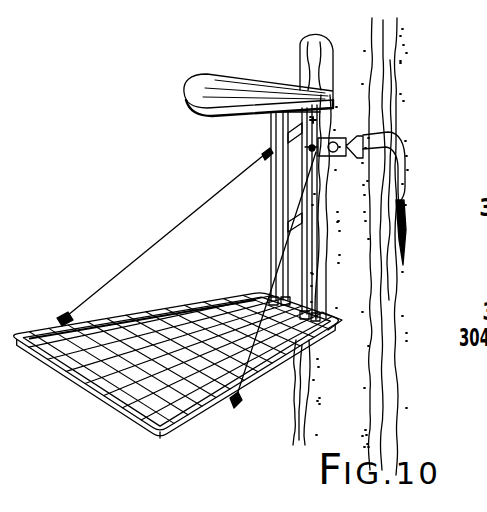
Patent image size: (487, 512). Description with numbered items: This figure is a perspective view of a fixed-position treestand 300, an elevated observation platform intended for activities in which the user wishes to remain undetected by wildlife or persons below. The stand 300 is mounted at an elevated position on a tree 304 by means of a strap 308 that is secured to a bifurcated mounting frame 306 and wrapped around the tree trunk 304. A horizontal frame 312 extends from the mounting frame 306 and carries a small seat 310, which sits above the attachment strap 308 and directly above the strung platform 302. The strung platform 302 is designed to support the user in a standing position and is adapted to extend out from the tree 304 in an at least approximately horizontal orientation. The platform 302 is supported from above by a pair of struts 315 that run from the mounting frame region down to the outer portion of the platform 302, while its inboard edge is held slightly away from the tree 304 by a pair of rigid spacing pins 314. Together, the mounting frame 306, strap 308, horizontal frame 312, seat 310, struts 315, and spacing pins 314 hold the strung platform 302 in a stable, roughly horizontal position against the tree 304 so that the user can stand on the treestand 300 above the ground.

The treestand 300 is at (246, 228).
The strung platform 302 is at (190, 303).
The tree 304 is at (396, 71).
The bifurcated mounting frame 306 is at (308, 265).
The strap 308 is at (355, 132).
The seat 310 is at (277, 80).
The horizontal frame 312 is at (320, 29).
The rigid spacing pins 314 is at (330, 320).
The struts 315 is at (281, 243).